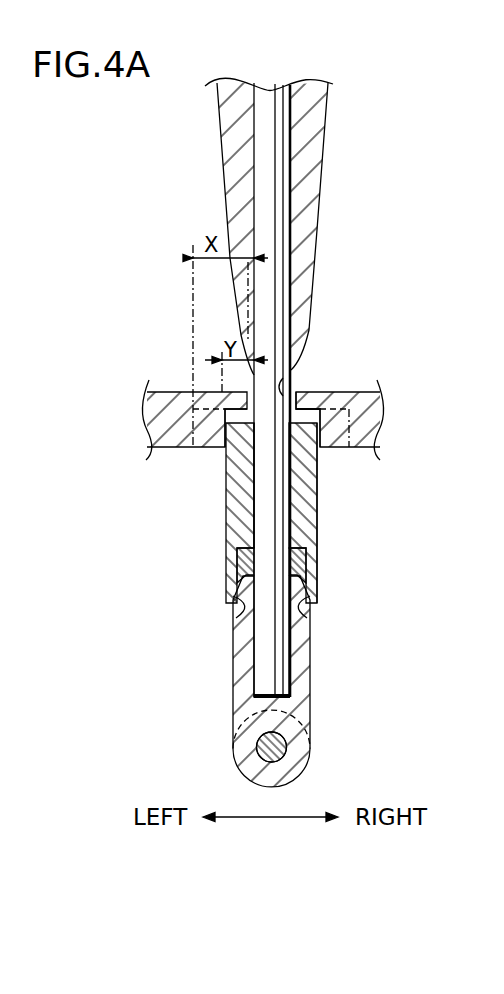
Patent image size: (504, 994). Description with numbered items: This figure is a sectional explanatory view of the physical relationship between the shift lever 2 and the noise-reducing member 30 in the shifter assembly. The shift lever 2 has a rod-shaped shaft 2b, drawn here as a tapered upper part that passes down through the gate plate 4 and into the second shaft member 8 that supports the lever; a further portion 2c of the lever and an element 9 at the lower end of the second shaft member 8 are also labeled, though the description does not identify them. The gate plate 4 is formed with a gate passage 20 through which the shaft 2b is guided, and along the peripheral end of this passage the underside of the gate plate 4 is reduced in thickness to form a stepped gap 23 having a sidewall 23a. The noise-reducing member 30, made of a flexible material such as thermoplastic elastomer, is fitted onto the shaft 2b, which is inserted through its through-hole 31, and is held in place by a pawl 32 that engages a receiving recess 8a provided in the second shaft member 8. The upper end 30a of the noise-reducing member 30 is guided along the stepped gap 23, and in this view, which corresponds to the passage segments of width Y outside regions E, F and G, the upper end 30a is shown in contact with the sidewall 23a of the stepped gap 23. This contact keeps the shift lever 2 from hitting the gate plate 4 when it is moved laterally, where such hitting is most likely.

The shift lever 2 is at (325, 207).
The shaft 2b is at (283, 173).
The blade outer surface 2c is at (333, 84).
The gate passage 20 is at (288, 378).
The upper end of the noise-reducing member 30a is at (305, 390).
The gate plate 4 is at (382, 393).
The sidewall of the stepped gap 23a is at (222, 428).
The stepped gap 23 is at (229, 435).
The through-hole 31 is at (256, 528).
The noise-reducing member 30 is at (317, 560).
The pawl 32 is at (240, 583).
The second shaft member 8 is at (311, 667).
The receiving recess 8a is at (237, 614).
The pivot shaft 9 is at (285, 741).